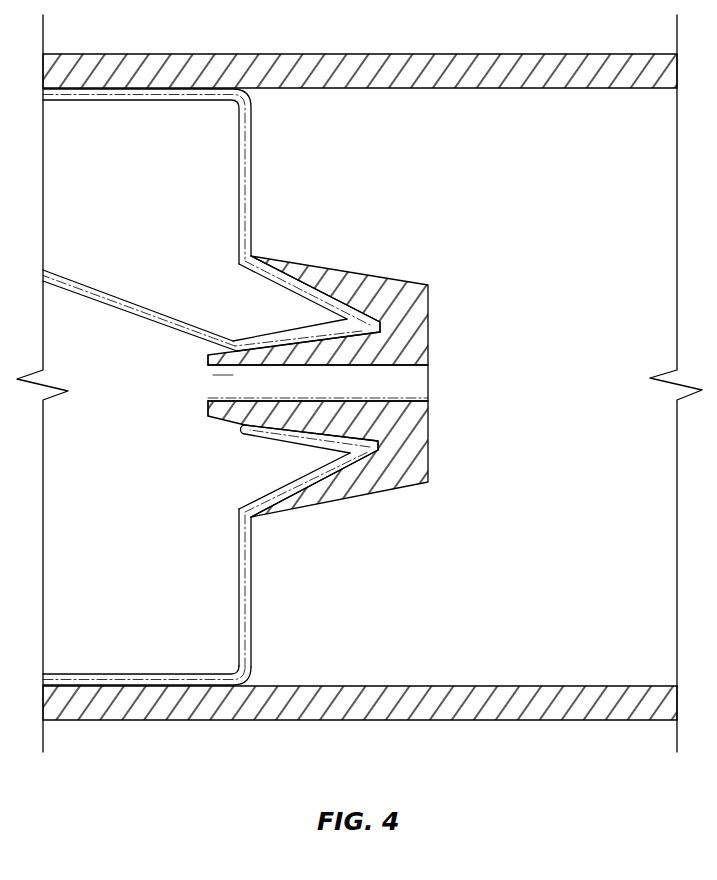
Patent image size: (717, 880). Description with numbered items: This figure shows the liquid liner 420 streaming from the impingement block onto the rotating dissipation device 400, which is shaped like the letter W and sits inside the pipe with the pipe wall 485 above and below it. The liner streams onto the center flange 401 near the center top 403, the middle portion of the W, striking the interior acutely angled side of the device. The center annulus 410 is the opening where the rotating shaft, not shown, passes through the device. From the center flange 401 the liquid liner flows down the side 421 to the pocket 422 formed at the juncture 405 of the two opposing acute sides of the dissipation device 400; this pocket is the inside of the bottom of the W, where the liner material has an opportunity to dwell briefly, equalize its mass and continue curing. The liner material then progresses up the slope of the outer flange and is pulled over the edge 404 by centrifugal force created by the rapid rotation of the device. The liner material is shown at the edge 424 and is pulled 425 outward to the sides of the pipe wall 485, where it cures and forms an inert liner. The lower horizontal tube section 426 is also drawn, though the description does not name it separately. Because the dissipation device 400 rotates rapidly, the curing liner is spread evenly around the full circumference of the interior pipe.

The dissipation device 400 is at (443, 328).
The center flange 401 is at (257, 357).
The center top 403 is at (208, 361).
The edge 404 is at (273, 513).
The juncture 405 is at (400, 452).
The center annulus 410 is at (200, 400).
The liquid liner 420 is at (63, 277).
The side 421 is at (272, 335).
The pocket 422 is at (346, 320).
The edge 424 is at (248, 266).
The pulled liner material 425 is at (239, 572).
The lower horizontal tube section 426 is at (113, 672).
The pipe wall 485 is at (535, 695).